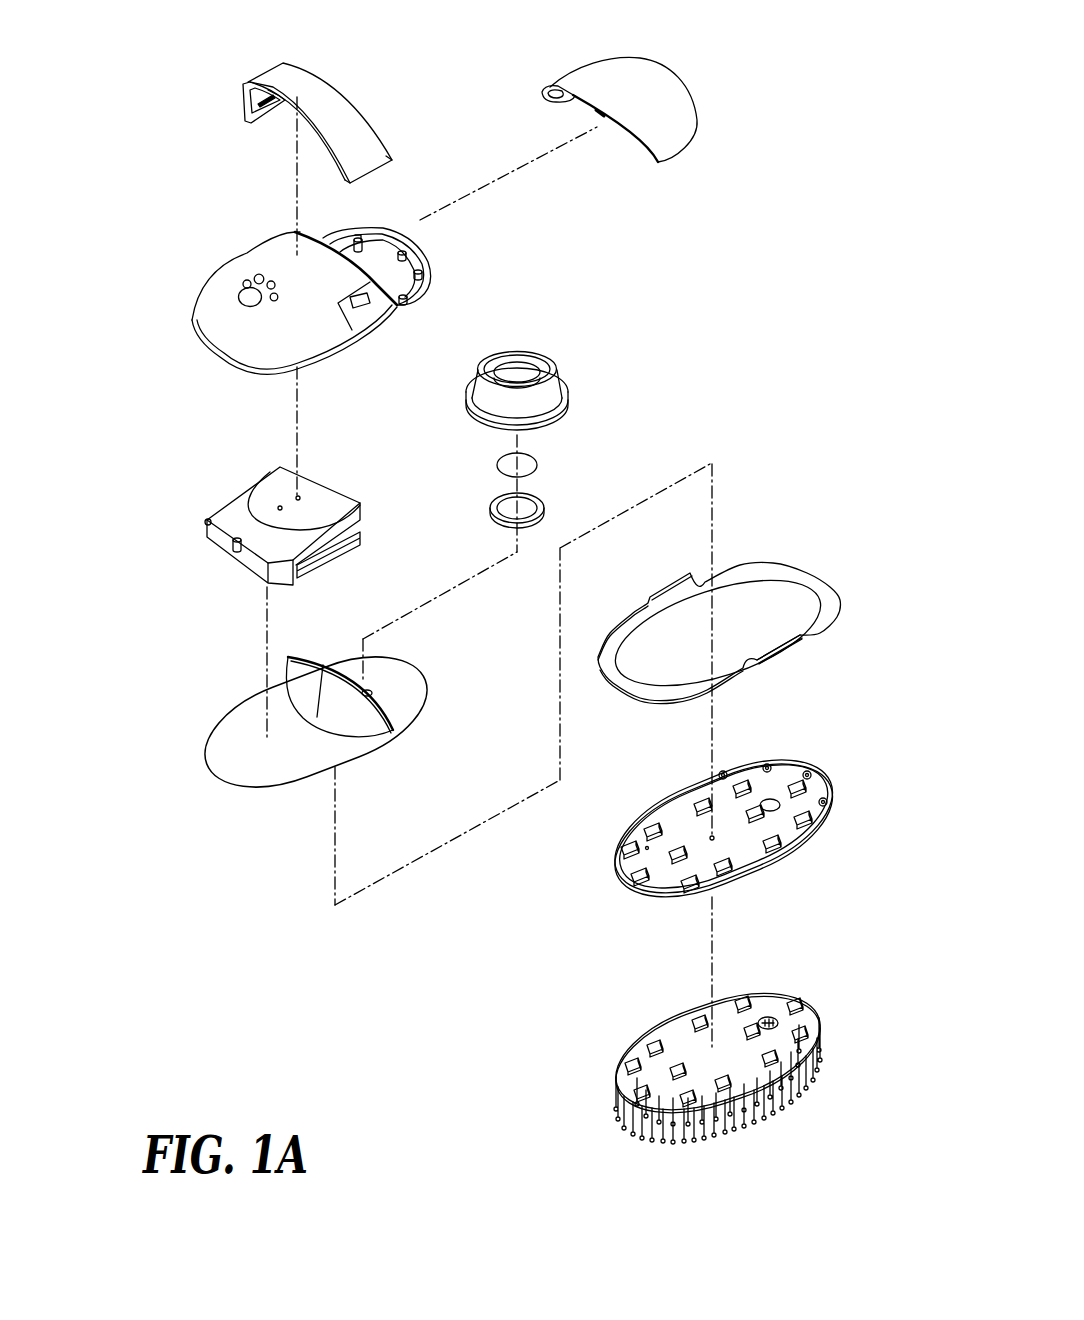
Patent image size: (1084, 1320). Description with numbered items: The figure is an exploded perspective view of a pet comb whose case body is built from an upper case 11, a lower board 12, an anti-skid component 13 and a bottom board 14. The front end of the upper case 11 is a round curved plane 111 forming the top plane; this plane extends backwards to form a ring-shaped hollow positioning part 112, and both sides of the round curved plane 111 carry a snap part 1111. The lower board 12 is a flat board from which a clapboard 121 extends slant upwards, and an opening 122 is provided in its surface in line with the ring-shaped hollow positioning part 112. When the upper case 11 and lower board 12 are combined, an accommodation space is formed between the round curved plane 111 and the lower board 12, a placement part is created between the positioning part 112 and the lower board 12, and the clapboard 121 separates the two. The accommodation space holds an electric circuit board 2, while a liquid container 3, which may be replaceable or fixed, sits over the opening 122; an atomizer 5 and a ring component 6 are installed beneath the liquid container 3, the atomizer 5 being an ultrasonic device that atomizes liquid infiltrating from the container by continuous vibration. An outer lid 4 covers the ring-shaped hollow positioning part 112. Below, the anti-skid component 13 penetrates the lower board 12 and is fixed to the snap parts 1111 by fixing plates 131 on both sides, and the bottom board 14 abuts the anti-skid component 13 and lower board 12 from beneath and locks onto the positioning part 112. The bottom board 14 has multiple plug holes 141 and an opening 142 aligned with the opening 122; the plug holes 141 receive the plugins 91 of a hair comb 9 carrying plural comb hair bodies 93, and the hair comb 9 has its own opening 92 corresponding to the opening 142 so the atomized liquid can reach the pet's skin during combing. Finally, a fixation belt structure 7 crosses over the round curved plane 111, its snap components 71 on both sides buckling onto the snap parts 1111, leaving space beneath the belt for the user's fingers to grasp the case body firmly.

The electric circuit board 2 is at (235, 507).
The liquid container 3 is at (503, 377).
The outer lid 4 is at (652, 90).
The atomizer 5 is at (532, 463).
The ring component 6 is at (540, 500).
The fixation belt structure 7 is at (327, 82).
The snap component 71 is at (266, 101).
The hair comb 9 is at (672, 1027).
The plugin 91 is at (627, 1060).
The opening 92 is at (773, 1022).
The comb hair bodies 93 is at (813, 1080).
The upper case 11 is at (207, 290).
The round curved plane 111 is at (230, 345).
The ring-shaped hollow positioning part 112 is at (425, 255).
The snap part 1111 is at (367, 303).
The lower board 12 is at (227, 735).
The clapboard 121 is at (353, 720).
The opening 122 is at (370, 692).
The anti-skid component 13 is at (800, 568).
The fixing plates 131 is at (790, 647).
The bottom board 14 is at (825, 780).
The plug holes 141 is at (697, 793).
The opening 142 is at (817, 820).